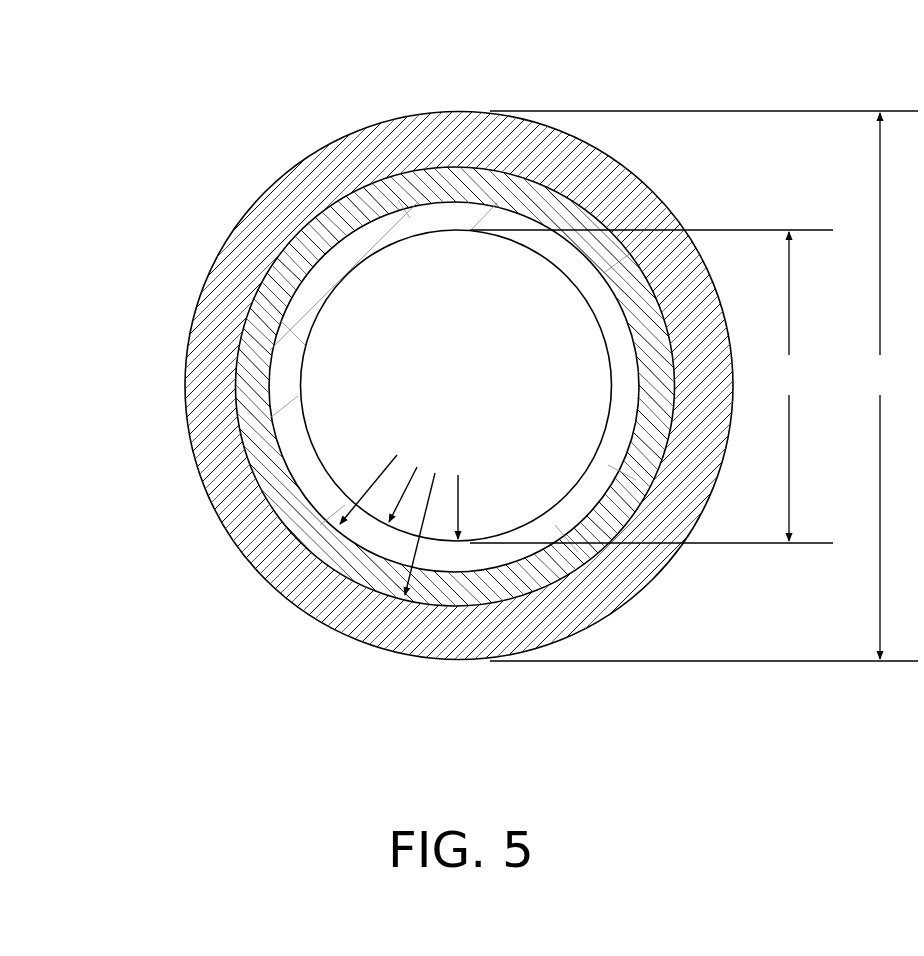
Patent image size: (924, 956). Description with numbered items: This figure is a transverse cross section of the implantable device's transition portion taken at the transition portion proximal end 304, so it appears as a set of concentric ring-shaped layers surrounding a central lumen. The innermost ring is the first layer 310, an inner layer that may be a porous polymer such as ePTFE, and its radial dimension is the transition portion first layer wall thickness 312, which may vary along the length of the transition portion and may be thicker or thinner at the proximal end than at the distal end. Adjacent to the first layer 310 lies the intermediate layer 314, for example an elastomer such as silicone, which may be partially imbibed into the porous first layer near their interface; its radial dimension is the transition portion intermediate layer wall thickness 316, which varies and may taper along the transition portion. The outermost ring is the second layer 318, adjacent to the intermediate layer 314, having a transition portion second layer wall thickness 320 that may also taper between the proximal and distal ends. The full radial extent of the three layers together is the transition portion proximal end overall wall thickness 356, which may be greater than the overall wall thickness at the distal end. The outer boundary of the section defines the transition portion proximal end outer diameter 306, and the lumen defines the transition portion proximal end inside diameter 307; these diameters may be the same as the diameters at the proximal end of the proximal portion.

The transition portion proximal end 304 is at (358, 85).
The transition portion proximal end outer diameter 306 is at (704, 386).
The transition portion proximal end inside diameter 307 is at (651, 386).
The first layer 310 is at (270, 418).
The transition portion first layer wall thickness 312 is at (370, 560).
The intermediate layer 314 is at (236, 369).
The transition portion intermediate layer wall thickness 316 is at (304, 556).
The second layer 318 is at (205, 283).
The transition portion second layer wall thickness 320 is at (388, 656).
The transition portion proximal end overall wall thickness 356 is at (459, 663).